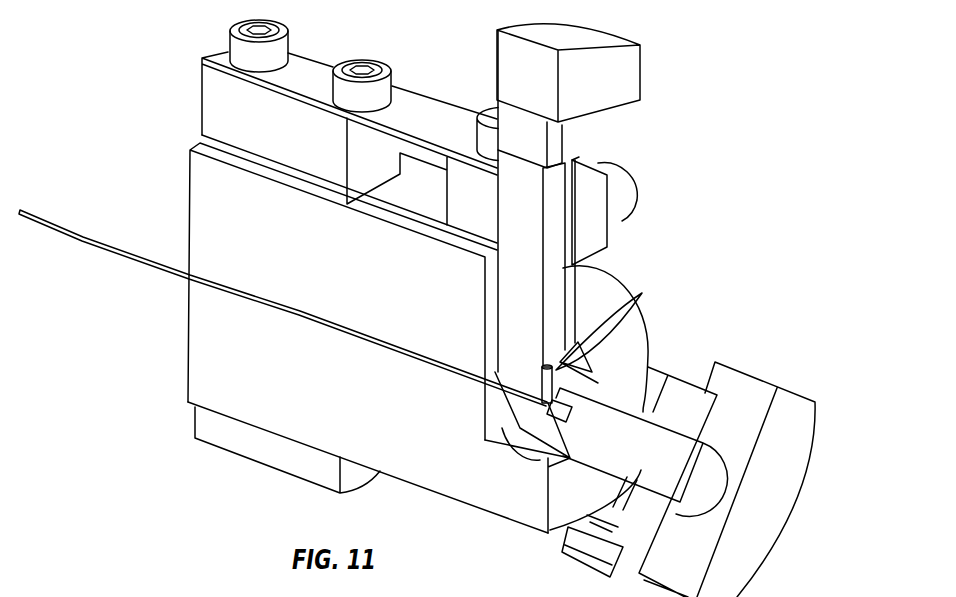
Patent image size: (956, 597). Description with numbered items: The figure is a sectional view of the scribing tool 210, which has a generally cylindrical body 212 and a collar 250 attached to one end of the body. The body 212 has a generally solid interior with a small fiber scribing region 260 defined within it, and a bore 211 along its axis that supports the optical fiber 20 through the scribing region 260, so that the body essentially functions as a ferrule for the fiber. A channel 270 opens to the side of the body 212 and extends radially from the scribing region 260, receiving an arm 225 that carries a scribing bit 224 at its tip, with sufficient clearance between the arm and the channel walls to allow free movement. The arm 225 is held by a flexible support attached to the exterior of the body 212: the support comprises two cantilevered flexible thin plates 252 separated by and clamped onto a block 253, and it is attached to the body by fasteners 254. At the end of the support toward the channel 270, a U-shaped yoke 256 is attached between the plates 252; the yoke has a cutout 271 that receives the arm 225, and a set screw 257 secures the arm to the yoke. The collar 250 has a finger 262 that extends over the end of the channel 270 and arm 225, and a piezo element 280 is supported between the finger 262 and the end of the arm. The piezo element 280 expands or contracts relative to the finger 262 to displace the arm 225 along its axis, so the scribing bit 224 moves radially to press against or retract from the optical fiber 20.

The optical fiber 20 is at (120, 252).
The scribing tool 210 is at (197, 465).
The bore 211 is at (288, 311).
The cylindrical body 212 is at (188, 197).
The scribing bit 224 is at (642, 293).
The arm 225 is at (553, 258).
The collar 250 is at (765, 376).
The flexible thin plate 252 is at (417, 196).
The block 253 is at (215, 93).
The fastener 254 is at (242, 19).
The U-shaped yoke 256 is at (603, 239).
The set screw 257 is at (617, 173).
The fiber scribing region 260 is at (502, 430).
The finger 262 is at (577, 29).
The channel 270 is at (488, 334).
The cutout 271 is at (570, 215).
The piezo element 280 is at (557, 145).